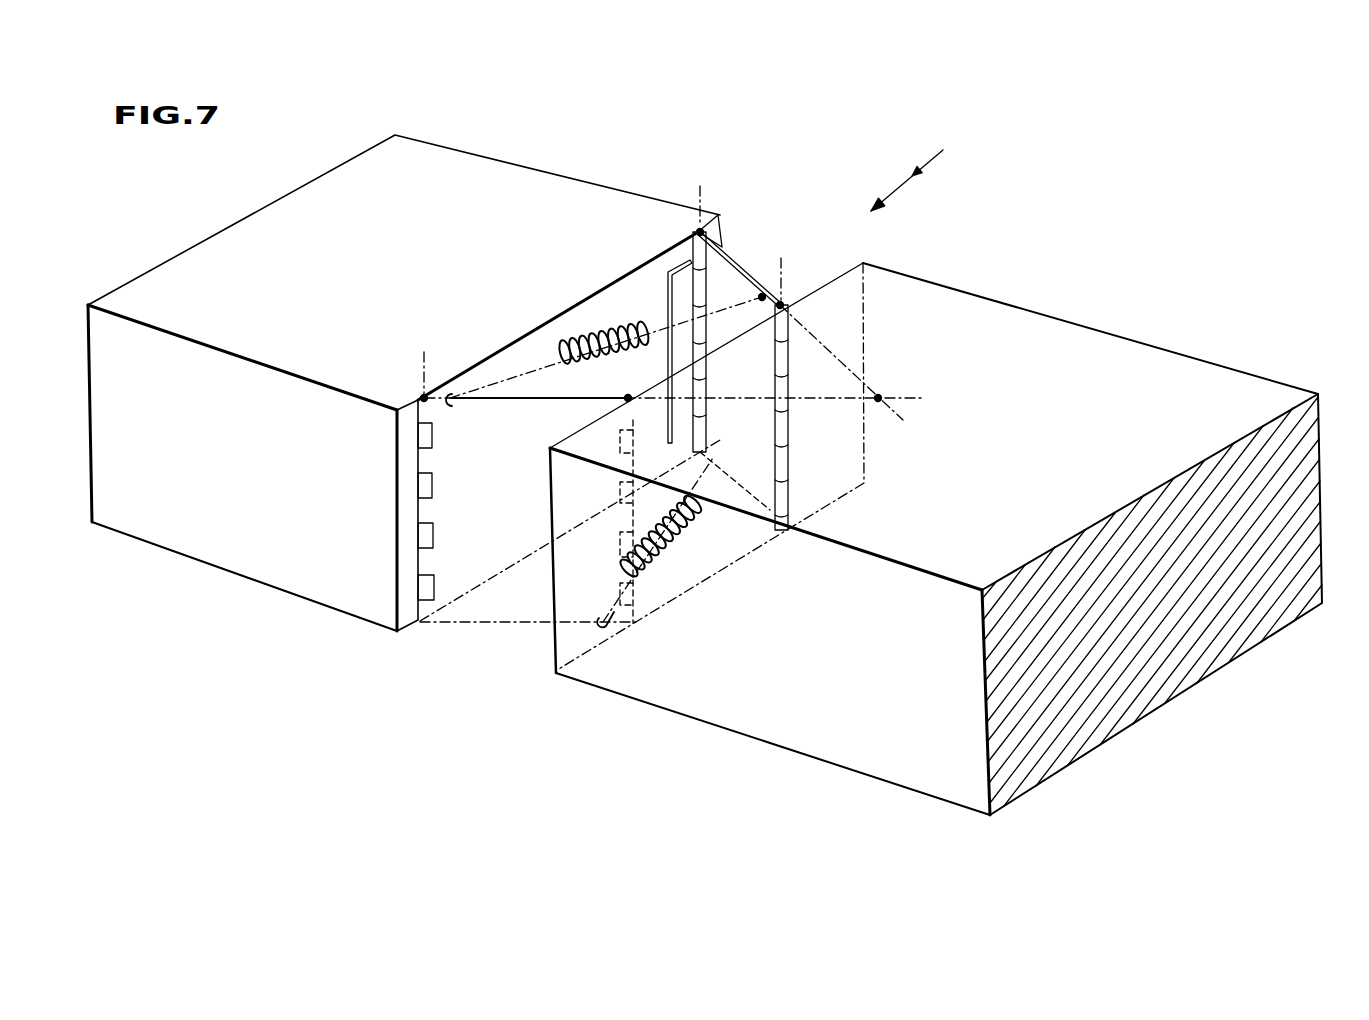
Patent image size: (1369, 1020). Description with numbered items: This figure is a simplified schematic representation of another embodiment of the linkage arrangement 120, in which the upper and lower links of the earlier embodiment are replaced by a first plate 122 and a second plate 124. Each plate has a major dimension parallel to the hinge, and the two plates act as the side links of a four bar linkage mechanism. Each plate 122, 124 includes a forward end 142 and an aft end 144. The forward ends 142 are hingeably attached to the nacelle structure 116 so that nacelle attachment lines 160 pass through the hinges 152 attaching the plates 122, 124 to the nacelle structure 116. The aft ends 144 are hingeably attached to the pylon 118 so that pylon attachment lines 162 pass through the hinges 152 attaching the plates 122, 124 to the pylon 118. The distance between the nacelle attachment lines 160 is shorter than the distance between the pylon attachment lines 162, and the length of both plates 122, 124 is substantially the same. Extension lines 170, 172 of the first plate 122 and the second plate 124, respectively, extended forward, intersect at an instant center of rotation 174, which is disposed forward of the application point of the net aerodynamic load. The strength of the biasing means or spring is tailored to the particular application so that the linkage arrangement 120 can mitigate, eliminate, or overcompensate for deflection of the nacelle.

The nacelle structure 116 is at (980, 518).
The pylon 118 is at (437, 258).
The linkage arrangement 120 is at (715, 375).
The first plate 122 is at (505, 608).
The second plate 124 is at (722, 267).
The forward end 142 is at (784, 303).
The aft end 144 is at (723, 223).
The hinges 152 is at (375, 497).
The nacelle attachment lines 160 is at (784, 298).
The pylon attachment lines 162 is at (698, 201).
The extension line 170 is at (840, 403).
The extension line 172 is at (832, 353).
The instant center of rotation 174 is at (879, 396).